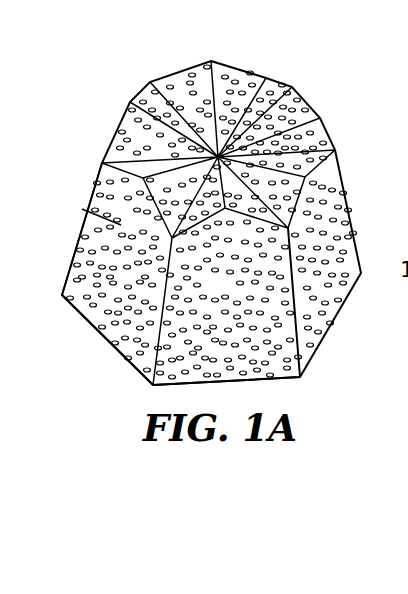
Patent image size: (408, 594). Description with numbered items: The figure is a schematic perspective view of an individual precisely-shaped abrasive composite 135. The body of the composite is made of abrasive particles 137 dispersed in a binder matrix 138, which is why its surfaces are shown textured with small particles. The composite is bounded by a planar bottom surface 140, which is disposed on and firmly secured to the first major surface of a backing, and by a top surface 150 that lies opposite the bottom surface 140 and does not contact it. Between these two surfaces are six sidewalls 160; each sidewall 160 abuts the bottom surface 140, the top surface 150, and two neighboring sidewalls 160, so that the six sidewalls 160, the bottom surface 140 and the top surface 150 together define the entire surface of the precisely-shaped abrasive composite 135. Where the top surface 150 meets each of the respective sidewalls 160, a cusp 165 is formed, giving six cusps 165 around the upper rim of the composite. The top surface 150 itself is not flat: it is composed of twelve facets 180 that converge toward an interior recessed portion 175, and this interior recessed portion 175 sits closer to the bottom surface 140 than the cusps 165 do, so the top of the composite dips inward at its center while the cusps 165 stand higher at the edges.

The precisely-shaped abrasive composite 135 is at (300, 62).
The abrasive particles 137 is at (128, 199).
The binder matrix 138 is at (117, 143).
The planar bottom surface 140 is at (114, 349).
The top surface 150 is at (236, 82).
The sidewalls 160 is at (279, 367).
The cusps 165 is at (130, 101).
The interior recessed portion 175 is at (321, 120).
The facets 180 is at (307, 178).